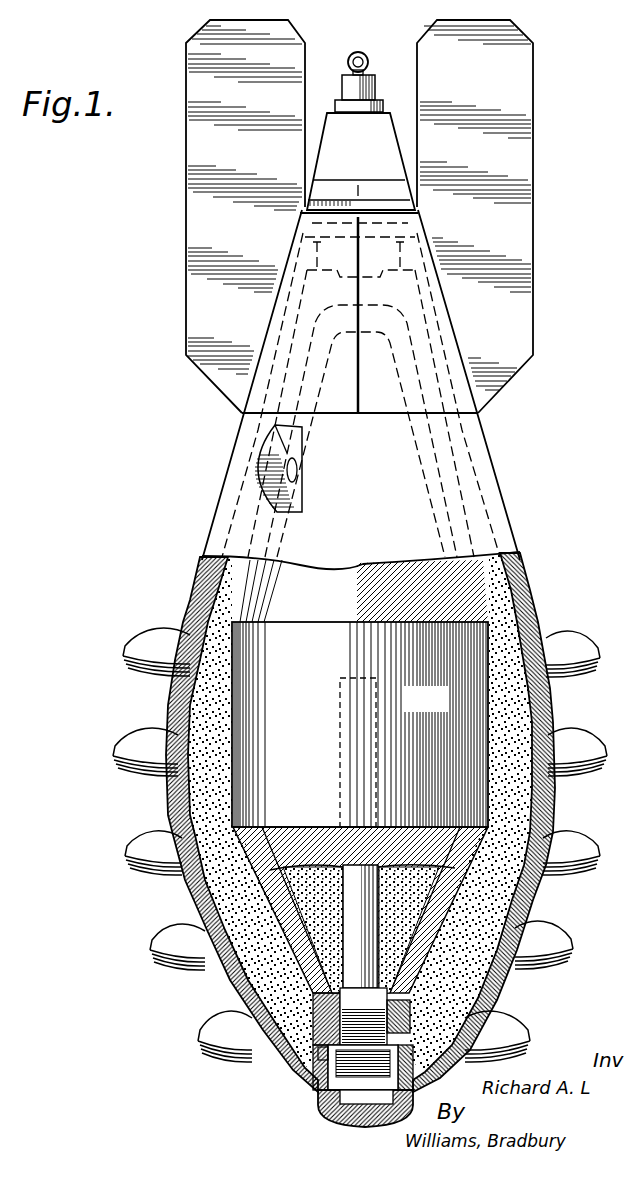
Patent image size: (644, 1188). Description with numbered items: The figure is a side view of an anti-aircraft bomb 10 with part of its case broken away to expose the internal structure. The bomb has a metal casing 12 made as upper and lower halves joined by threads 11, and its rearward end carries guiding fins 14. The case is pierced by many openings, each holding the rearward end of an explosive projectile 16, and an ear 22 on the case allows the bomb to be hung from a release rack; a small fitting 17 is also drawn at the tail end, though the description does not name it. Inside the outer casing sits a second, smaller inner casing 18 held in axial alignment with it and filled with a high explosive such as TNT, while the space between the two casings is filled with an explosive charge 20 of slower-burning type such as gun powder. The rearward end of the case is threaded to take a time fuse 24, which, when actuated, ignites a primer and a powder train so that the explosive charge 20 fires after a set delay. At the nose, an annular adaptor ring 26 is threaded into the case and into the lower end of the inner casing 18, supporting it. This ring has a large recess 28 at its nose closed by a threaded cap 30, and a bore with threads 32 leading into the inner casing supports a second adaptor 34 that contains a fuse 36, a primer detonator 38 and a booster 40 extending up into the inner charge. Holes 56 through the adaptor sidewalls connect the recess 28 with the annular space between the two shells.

The bomb 10 is at (490, 468).
The threads 11 is at (195, 600).
The metal casing 12 is at (515, 565).
The guiding fins 14 is at (338, 216).
The explosive projectile 16 is at (123, 733).
The suspension eye 17 is at (378, 53).
The inner casing 18 is at (360, 724).
The explosive charge 20 is at (525, 638).
The ear 22 is at (262, 457).
The time fuse 24 is at (361, 142).
The adaptor ring 26 is at (320, 1103).
The recess 28 is at (332, 1081).
The threaded cap 30 is at (369, 1128).
The threads 32 is at (405, 1013).
The second adaptor 34 is at (343, 1010).
The fuse 36 is at (433, 1067).
The primer detonator 38 is at (408, 1035).
The booster 40 is at (360, 910).
The holes 56 is at (320, 1058).